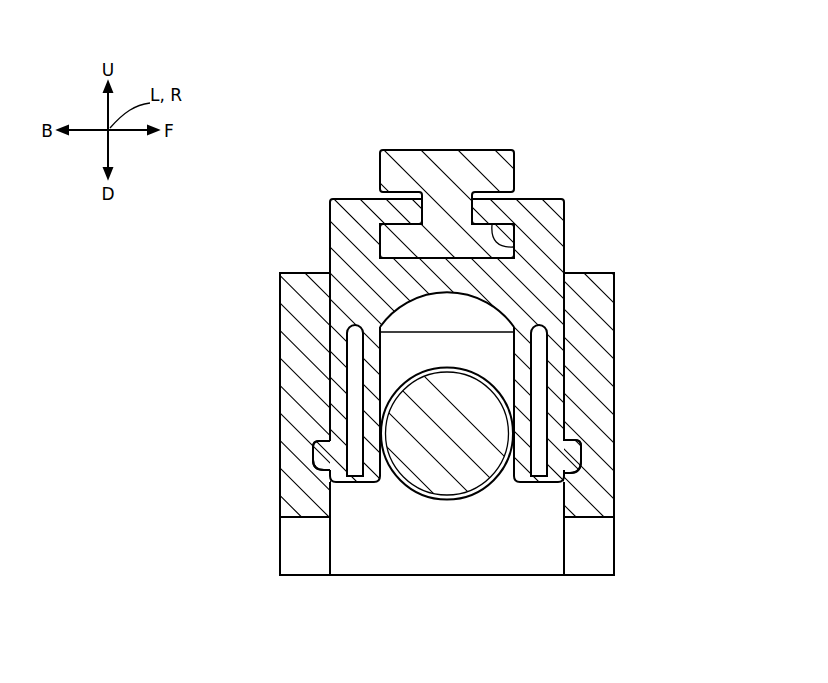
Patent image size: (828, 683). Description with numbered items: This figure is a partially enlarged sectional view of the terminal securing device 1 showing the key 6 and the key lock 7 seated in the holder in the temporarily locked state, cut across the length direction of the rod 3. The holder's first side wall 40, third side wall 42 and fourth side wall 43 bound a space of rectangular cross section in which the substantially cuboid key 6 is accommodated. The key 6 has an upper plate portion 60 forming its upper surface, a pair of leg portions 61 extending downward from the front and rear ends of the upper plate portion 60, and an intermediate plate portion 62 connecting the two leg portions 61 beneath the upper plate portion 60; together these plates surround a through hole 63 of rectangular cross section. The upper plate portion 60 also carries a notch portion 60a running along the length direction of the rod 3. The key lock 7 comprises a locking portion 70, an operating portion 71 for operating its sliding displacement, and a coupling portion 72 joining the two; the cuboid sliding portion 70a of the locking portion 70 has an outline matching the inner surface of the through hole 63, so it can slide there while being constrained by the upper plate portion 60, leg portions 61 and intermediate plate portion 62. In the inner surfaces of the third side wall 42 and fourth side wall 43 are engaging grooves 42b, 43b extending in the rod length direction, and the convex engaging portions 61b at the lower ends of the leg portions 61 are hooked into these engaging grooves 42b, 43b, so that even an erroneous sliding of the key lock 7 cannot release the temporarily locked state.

The wire harness fixing structure 1 is at (656, 86).
The rod 3 is at (470, 478).
The key 6 is at (598, 163).
The key lock 7 is at (522, 100).
The first side wall 40 is at (412, 558).
The third side wall 42 is at (600, 360).
The engaging groove 42b is at (584, 452).
The fourth side wall 43 is at (295, 358).
The engaging groove 43b is at (308, 452).
The upper plate portion 60 is at (535, 206).
The notch portion 60a is at (471, 212).
The leg portions 61 is at (338, 301).
The engaging portions 61b is at (308, 466).
The intermediate plate portion 62 is at (448, 282).
The through hole 63 is at (516, 245).
The locking portion 70 is at (434, 177).
The sliding portion 70a is at (393, 248).
The operating portion 71 is at (408, 157).
The coupling portion 72 is at (432, 211).